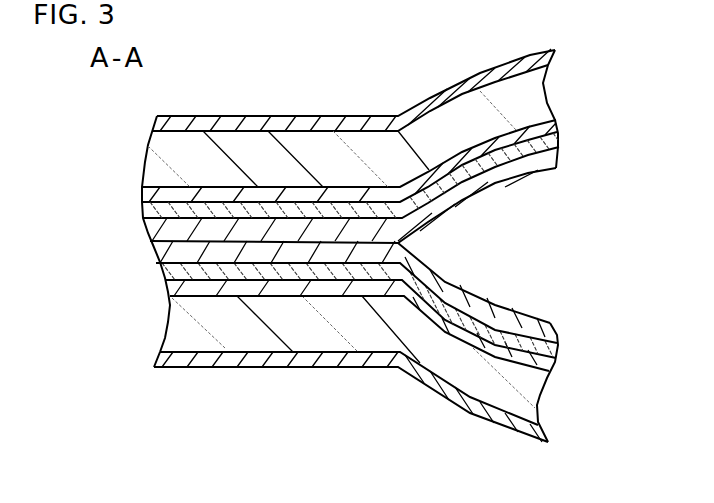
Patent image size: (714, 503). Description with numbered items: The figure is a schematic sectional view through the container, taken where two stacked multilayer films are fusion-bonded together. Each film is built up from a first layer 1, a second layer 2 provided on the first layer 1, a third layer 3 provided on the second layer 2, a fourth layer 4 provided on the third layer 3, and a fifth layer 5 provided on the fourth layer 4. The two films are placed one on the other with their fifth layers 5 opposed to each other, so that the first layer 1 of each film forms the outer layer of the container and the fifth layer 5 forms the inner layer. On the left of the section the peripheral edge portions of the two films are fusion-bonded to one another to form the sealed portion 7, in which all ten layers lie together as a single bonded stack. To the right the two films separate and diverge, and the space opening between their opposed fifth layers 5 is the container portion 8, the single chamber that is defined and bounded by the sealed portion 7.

The first layer 1 is at (156, 123).
The second layer 2 is at (148, 154).
The third layer 3 is at (143, 191).
The fourth layer 4 is at (143, 210).
The fifth layer 5 is at (150, 232).
The sealed portion 7 is at (280, 116).
The container portion 8 is at (516, 256).